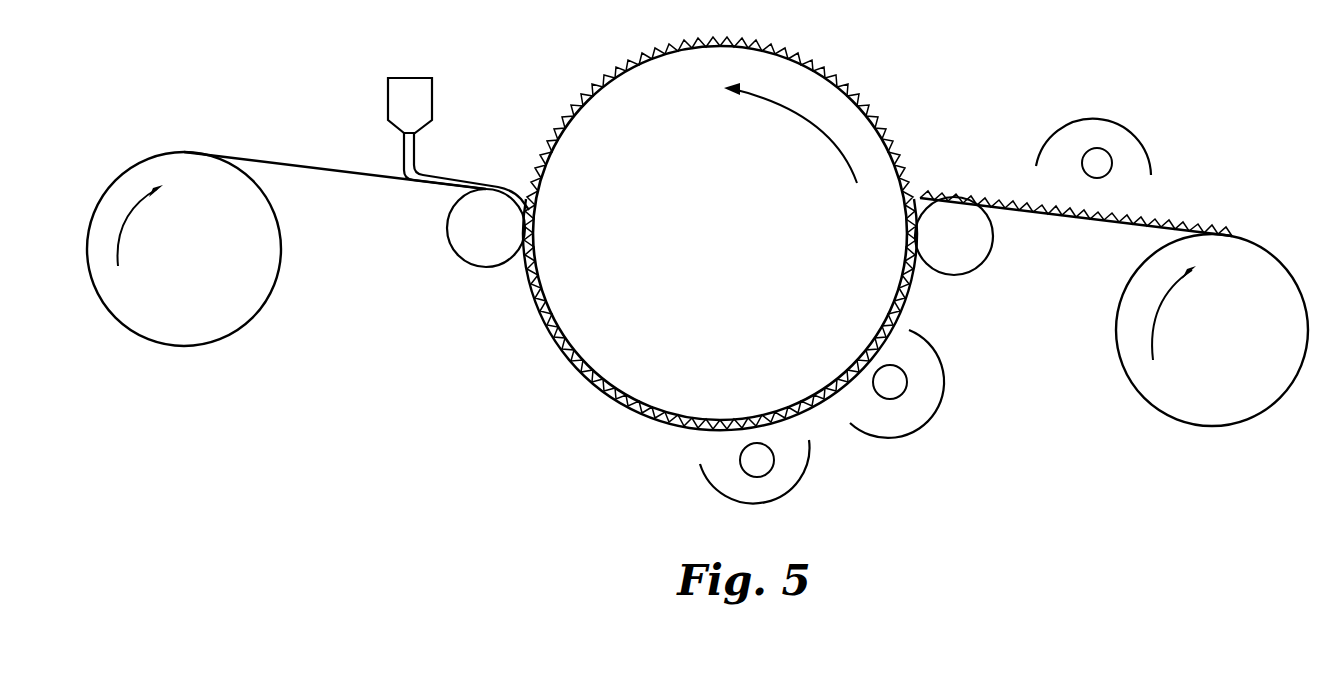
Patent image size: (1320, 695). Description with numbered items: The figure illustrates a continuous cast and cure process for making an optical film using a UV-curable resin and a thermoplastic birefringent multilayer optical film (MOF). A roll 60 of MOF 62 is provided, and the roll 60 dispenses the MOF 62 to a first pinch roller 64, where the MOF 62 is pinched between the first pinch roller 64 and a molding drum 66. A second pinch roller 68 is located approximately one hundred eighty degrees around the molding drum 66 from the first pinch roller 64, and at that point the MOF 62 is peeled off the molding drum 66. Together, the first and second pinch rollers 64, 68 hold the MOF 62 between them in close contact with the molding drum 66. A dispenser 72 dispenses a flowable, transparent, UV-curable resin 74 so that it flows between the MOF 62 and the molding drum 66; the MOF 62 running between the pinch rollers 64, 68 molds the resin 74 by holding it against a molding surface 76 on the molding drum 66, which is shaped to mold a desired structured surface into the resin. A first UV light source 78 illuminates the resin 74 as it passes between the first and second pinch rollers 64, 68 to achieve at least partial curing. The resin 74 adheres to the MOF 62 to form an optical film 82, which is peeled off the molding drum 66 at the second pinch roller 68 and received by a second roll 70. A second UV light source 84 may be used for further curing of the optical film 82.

The roll 60 is at (247, 316).
The MOF 62 is at (293, 163).
The first pinch roller 64 is at (483, 260).
The molding drum 66 is at (603, 340).
The second pinch roller 68 is at (962, 263).
The second roll 70 is at (1262, 407).
The dispenser 72 is at (418, 108).
The UV-curable resin 74 is at (471, 178).
The molding surface 76 is at (816, 58).
The first UV light source 78 is at (795, 484).
The optical film 82 is at (966, 194).
The second UV light source 84 is at (1125, 133).